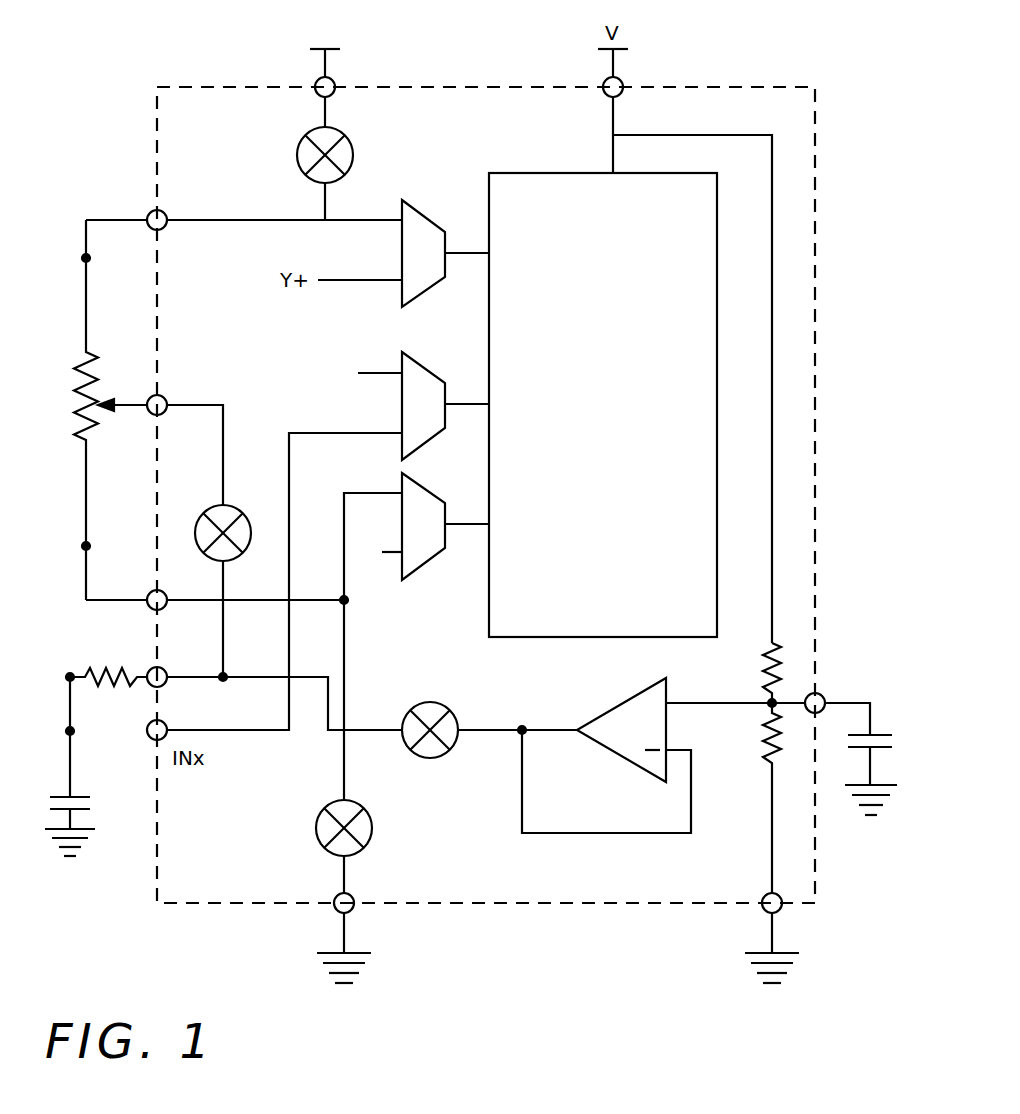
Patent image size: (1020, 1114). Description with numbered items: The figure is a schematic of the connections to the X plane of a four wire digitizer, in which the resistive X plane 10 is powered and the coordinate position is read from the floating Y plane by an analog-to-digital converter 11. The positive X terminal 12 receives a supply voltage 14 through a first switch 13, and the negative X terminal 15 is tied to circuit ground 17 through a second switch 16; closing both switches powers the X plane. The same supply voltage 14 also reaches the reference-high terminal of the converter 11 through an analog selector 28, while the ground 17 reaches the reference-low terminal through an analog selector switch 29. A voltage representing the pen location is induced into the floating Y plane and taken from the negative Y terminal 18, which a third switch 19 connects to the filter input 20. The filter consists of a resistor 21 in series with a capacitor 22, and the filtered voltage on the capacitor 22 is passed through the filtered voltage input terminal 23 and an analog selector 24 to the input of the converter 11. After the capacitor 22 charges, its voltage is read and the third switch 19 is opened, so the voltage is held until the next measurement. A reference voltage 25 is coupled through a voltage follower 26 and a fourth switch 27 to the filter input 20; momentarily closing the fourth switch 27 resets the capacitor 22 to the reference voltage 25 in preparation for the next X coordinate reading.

The resistive X plane Dx 10 is at (86, 377).
The ADC 11 is at (685, 292).
The X+ terminal 12 is at (147, 218).
The switch SAx 13 is at (298, 155).
The voltage V 14 is at (310, 44).
The X− terminal 15 is at (150, 592).
The switch SCx 16 is at (318, 828).
The circuit ground 17 is at (336, 912).
The Y− terminal 18 is at (167, 407).
The switch SBx 19 is at (228, 513).
The filter input Fx 20 is at (169, 677).
The resistor Rx 21 is at (88, 668).
The capacitor Cx 22 is at (60, 800).
The filtered voltage input terminal INx 23 is at (147, 792).
The analog selector 24 is at (405, 452).
The reference voltage Vref 25 is at (848, 675).
The voltage follower 26 is at (658, 768).
The switch SDx 27 is at (423, 708).
The analog selector 28 is at (402, 298).
The analog selector switch 29 is at (402, 572).